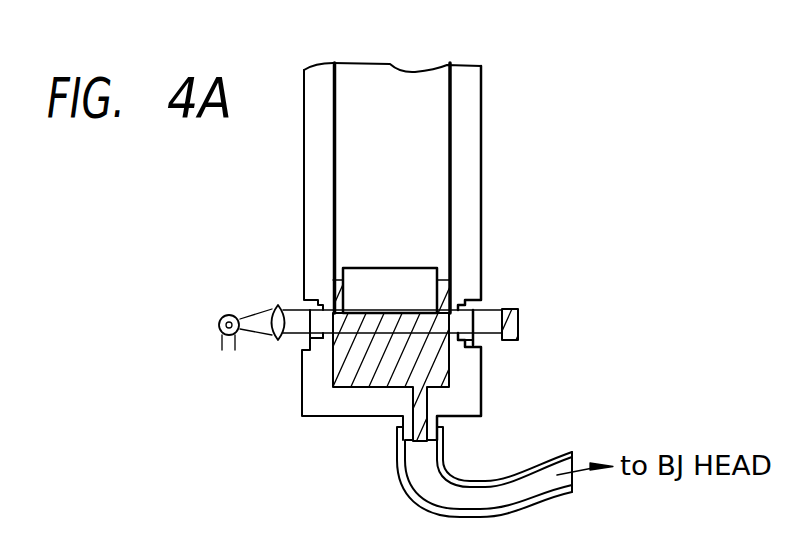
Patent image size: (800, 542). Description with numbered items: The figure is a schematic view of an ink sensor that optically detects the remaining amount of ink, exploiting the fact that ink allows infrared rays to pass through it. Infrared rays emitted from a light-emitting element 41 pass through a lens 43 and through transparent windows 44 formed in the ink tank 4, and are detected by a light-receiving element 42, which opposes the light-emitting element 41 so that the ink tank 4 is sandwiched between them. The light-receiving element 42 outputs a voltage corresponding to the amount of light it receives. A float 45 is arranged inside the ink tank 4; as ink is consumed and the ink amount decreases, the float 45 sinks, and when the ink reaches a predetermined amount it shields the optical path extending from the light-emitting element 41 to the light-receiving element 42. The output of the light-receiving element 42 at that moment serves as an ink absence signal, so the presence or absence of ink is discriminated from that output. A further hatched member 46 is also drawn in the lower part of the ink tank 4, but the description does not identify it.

The ink tank 4 is at (428, 192).
The light-emitting element 41 is at (225, 312).
The light-receiving element 42 is at (519, 309).
The lens 43 is at (277, 302).
The transparent windows 44 is at (309, 348).
The float 45 is at (418, 277).
The ink supply member 46 is at (355, 370).